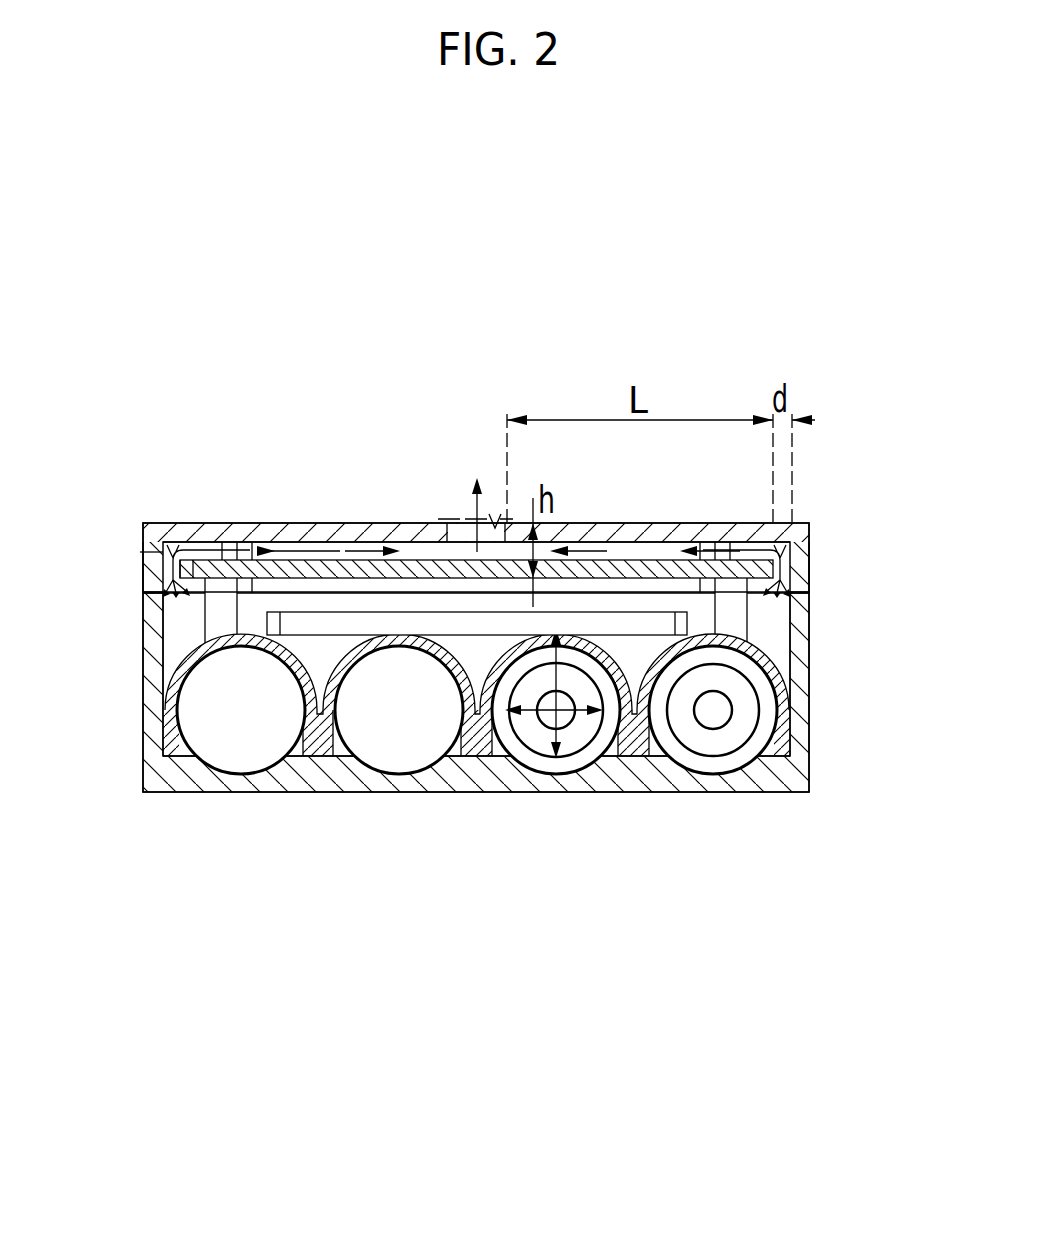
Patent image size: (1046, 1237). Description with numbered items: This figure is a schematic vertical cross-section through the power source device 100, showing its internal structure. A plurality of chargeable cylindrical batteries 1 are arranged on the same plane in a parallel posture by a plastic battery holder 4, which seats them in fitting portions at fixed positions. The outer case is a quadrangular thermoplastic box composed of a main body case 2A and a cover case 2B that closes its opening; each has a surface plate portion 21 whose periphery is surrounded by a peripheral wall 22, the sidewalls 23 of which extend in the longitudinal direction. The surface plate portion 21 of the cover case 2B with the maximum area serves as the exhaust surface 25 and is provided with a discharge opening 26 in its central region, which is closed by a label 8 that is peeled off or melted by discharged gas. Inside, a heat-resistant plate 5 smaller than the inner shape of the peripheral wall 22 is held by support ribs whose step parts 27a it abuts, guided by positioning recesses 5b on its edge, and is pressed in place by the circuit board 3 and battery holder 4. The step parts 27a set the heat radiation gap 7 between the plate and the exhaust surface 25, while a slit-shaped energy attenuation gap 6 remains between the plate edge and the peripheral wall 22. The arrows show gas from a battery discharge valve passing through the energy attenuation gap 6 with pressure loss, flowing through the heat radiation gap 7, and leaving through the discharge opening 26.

The power source device 100 is at (803, 197).
The battery 1 is at (267, 728).
The main body case 2A is at (849, 986).
The cover case 2B is at (868, 283).
The circuit board 3 is at (430, 636).
The battery holder 4 is at (388, 645).
The heat-resistant plate 5 is at (422, 560).
The positioning recess 5b is at (212, 560).
The energy attenuation gap 6 is at (172, 540).
The heat radiation gap 7 is at (283, 523).
The label 8 is at (448, 519).
The surface plate portion 21 is at (490, 795).
The peripheral wall 22 is at (143, 550).
The sidewall 23 is at (148, 680).
The exhaust surface 25 is at (338, 540).
The discharge opening 26 is at (495, 514).
The step part 27a is at (218, 622).